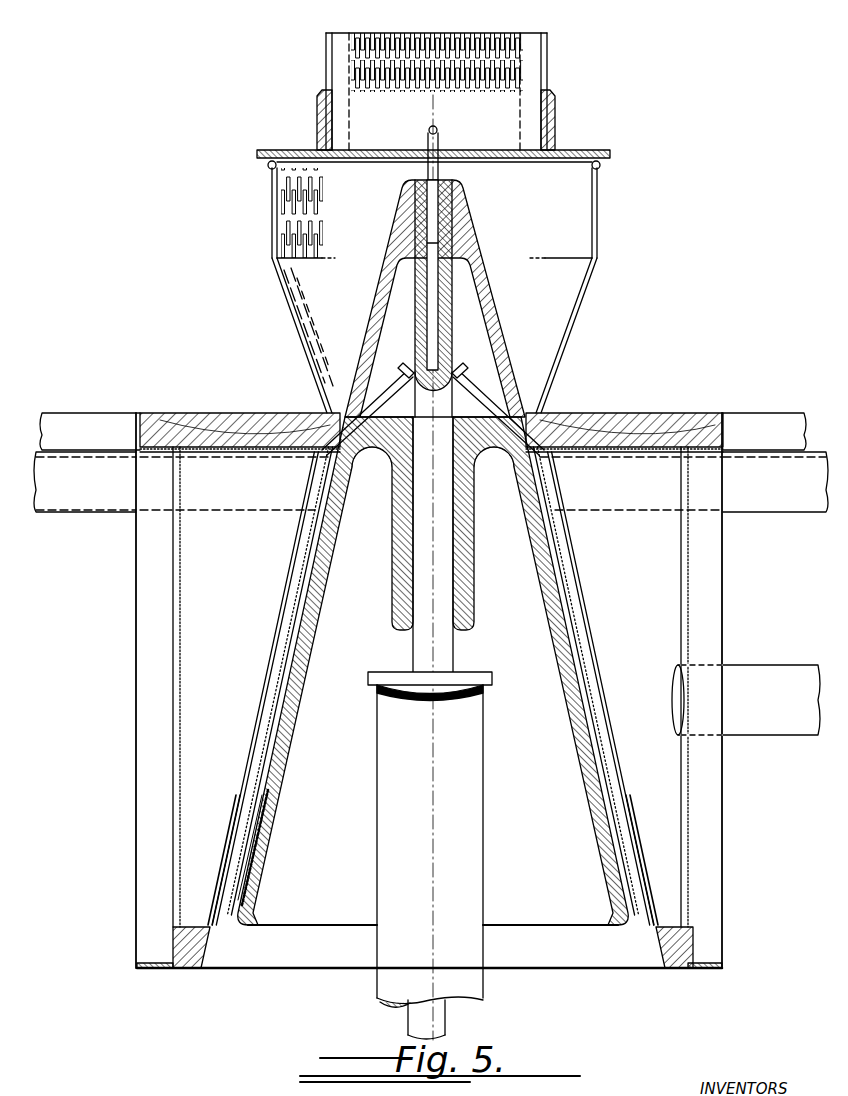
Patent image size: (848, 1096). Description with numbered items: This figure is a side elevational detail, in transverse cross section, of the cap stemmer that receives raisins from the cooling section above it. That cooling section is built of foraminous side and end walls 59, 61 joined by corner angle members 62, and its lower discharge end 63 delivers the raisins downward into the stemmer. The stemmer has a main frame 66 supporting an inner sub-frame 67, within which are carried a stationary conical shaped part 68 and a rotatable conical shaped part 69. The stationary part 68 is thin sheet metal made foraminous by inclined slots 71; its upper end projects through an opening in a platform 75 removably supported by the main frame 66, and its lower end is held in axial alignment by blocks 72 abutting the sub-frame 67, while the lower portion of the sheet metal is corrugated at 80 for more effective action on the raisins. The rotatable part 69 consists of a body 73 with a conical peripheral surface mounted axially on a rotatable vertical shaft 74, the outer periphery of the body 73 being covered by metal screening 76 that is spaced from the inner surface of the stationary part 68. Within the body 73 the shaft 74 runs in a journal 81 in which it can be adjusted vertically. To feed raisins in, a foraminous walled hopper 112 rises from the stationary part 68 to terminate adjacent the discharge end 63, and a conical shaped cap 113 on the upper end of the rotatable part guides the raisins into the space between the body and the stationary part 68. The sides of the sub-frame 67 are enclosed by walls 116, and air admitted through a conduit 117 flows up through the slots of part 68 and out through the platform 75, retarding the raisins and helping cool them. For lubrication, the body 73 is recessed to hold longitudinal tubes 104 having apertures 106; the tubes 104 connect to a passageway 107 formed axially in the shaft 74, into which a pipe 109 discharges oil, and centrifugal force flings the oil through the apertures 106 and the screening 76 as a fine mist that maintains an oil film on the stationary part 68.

The foraminous side wall 59 is at (548, 72).
The foraminous end wall 61 is at (520, 46).
The corner angle member 62 is at (325, 68).
The lower discharge end 63 is at (512, 158).
The main frame 66 is at (805, 505).
The sub-frame 67 is at (722, 626).
The stationary conical shaped part 68 is at (584, 590).
The rotatable conical shaped part 69 is at (536, 596).
The inclined slot 71 is at (265, 662).
The block 72 is at (192, 968).
The body 73 is at (310, 655).
The rotatable vertical shaft 74 is at (410, 648).
The platform 75 is at (618, 413).
The metal screening 76 is at (312, 544).
The corrugated lower portion 80 is at (222, 860).
The journal 81 is at (475, 778).
The longitudinal tube 104 is at (290, 730).
The aperture 106 is at (262, 818).
The passageway 107 is at (433, 296).
The pipe 109 is at (439, 148).
The foraminous walled hopper 112 is at (582, 248).
The conical shaped cap 113 is at (468, 255).
The wall 116 is at (181, 640).
The conduit 117 is at (770, 680).